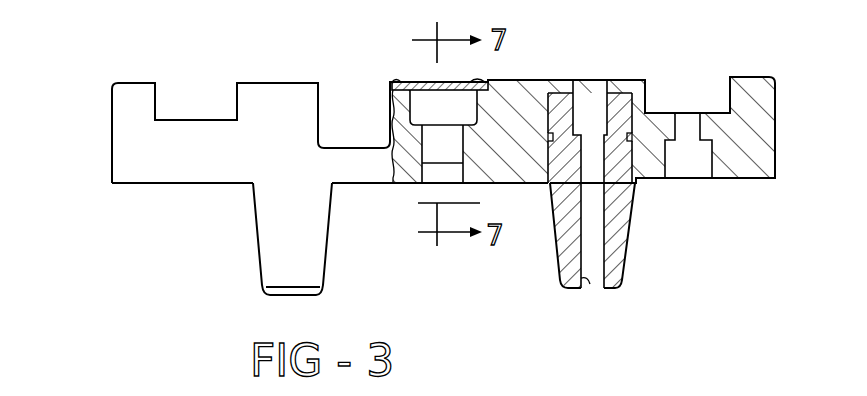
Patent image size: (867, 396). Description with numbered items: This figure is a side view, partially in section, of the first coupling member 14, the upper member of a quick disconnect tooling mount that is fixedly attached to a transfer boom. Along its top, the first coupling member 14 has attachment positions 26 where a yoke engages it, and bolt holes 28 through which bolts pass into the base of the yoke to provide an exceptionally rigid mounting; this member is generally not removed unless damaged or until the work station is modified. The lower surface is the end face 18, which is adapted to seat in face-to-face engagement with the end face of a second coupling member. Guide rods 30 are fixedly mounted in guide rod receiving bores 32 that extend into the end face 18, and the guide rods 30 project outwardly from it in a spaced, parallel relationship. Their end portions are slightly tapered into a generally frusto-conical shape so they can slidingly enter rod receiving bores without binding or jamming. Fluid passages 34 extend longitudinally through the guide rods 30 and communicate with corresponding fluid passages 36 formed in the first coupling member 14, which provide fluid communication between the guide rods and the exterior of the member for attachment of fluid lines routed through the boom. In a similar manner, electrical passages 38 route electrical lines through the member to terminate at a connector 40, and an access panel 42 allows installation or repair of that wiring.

The first coupling member 14 is at (123, 106).
The end face 18 is at (143, 178).
The attachment positions 26 is at (728, 98).
The bolt holes 28 is at (714, 168).
The guide rods 30 is at (265, 255).
The guide rod receiving bores 32 is at (553, 182).
The fluid passages 34 is at (597, 293).
The fluid passages 36 is at (594, 81).
The electrical passages 38 is at (430, 108).
The connector 40 is at (432, 154).
The access panel 42 is at (428, 87).